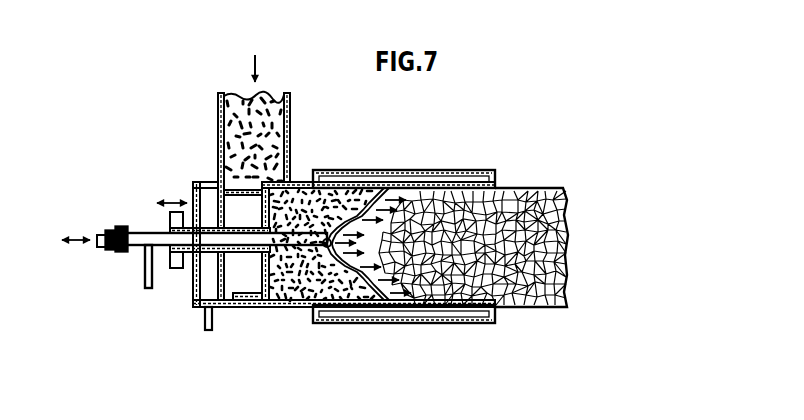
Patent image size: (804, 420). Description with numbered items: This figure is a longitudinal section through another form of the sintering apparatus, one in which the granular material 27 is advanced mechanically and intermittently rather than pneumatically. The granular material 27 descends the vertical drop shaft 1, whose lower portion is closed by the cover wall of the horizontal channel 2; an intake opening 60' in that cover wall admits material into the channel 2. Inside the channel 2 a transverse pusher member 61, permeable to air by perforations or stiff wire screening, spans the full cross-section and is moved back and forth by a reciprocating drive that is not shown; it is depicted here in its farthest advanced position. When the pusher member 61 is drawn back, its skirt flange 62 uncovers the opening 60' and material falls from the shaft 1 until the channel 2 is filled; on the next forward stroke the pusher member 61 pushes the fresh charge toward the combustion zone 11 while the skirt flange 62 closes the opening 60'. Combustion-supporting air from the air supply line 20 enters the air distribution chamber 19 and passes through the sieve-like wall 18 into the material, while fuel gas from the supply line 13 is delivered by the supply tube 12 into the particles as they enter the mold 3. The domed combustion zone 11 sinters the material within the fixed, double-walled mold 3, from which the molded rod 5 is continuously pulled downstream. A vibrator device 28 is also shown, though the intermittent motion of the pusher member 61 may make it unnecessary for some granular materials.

The vertical drop shaft 1 is at (290, 97).
The horizontal channel 2 is at (273, 307).
The mold 3 is at (468, 170).
The molded rod 5 is at (518, 188).
The combustion zone 11 is at (362, 193).
The supply tube 12 is at (138, 235).
The supply line 13 is at (143, 284).
The sieve-like wall 18 is at (216, 203).
The air distribution chamber 19 is at (210, 272).
The air supply line 20 is at (205, 330).
The granular material 27 is at (237, 118).
The vibrator device 28 is at (103, 252).
The intake opening 60' is at (281, 158).
The pusher member 61 is at (253, 267).
The skirt flange 62 is at (248, 307).